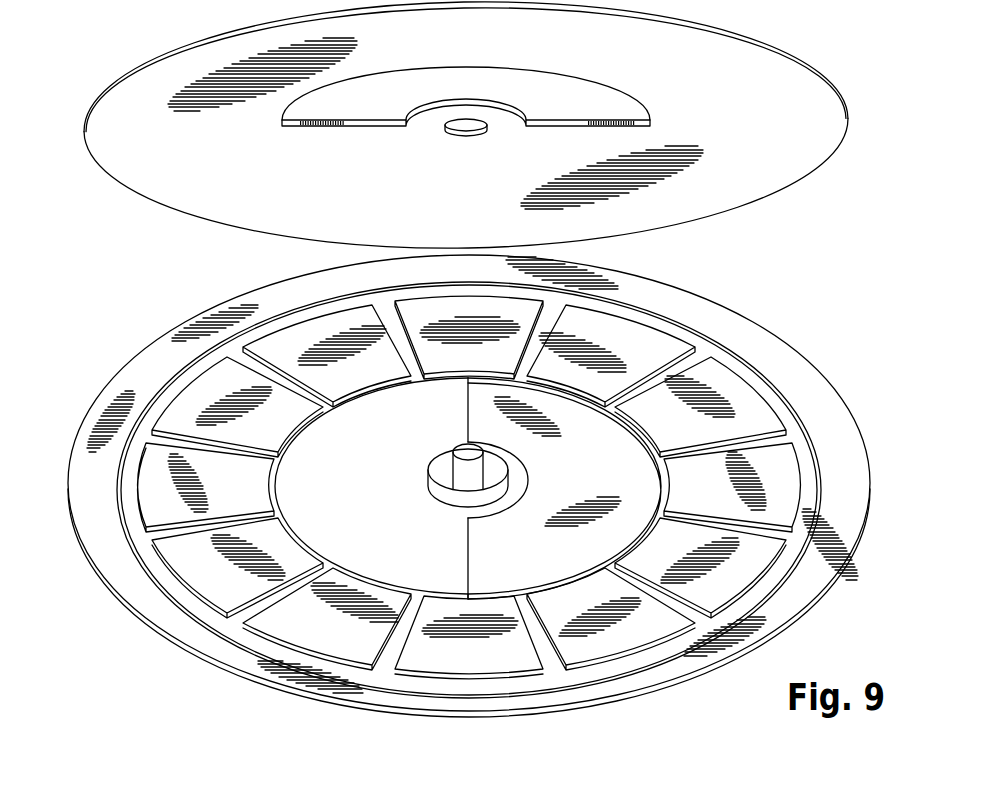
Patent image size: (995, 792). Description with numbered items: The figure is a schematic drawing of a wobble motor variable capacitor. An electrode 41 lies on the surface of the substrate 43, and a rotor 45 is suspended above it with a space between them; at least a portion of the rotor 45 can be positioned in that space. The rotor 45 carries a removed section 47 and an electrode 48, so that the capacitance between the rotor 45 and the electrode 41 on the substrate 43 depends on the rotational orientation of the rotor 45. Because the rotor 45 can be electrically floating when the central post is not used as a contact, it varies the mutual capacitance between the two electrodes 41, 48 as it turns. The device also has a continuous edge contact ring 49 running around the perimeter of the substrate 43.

The electrode 41 is at (484, 548).
The substrate 43 is at (424, 520).
The rotor 45 is at (745, 37).
The removed section 47 is at (385, 88).
The electrode 48 is at (380, 198).
The continuous edge contact ring 49 is at (607, 683).